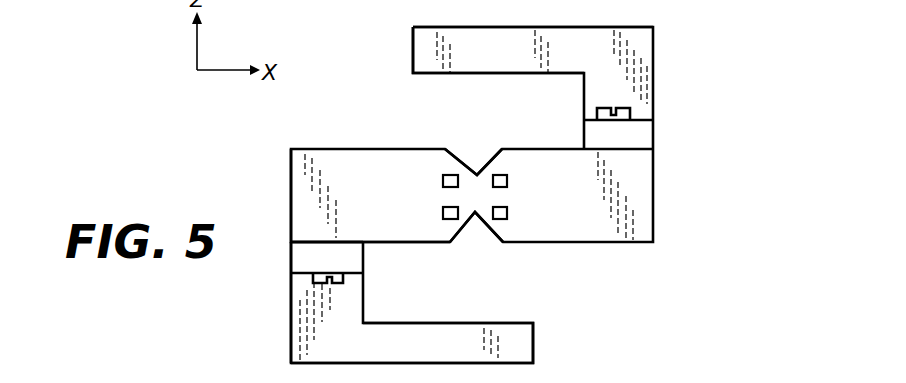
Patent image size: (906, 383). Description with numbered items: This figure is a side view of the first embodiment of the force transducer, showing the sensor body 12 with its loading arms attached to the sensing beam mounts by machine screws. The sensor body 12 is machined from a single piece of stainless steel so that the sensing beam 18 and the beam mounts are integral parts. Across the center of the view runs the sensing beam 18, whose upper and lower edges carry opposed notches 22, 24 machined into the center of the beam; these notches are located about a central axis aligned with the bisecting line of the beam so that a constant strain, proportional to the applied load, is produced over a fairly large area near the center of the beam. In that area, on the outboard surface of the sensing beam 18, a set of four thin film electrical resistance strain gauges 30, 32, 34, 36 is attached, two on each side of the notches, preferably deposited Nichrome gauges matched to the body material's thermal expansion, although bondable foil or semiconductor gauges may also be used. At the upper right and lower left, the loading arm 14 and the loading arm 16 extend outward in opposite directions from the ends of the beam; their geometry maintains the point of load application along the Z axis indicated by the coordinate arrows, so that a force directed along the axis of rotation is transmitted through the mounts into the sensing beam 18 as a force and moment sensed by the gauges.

The sensor body 12 is at (674, 206).
The loading arm 14 is at (517, 60).
The loading arm 16 is at (468, 356).
The sensing beam 18 is at (318, 198).
The notch 22 is at (468, 165).
The notch 24 is at (468, 224).
The strain gauge 30 is at (443, 181).
The strain gauge 32 is at (443, 213).
The strain gauge 34 is at (507, 181).
The strain gauge 36 is at (507, 212).